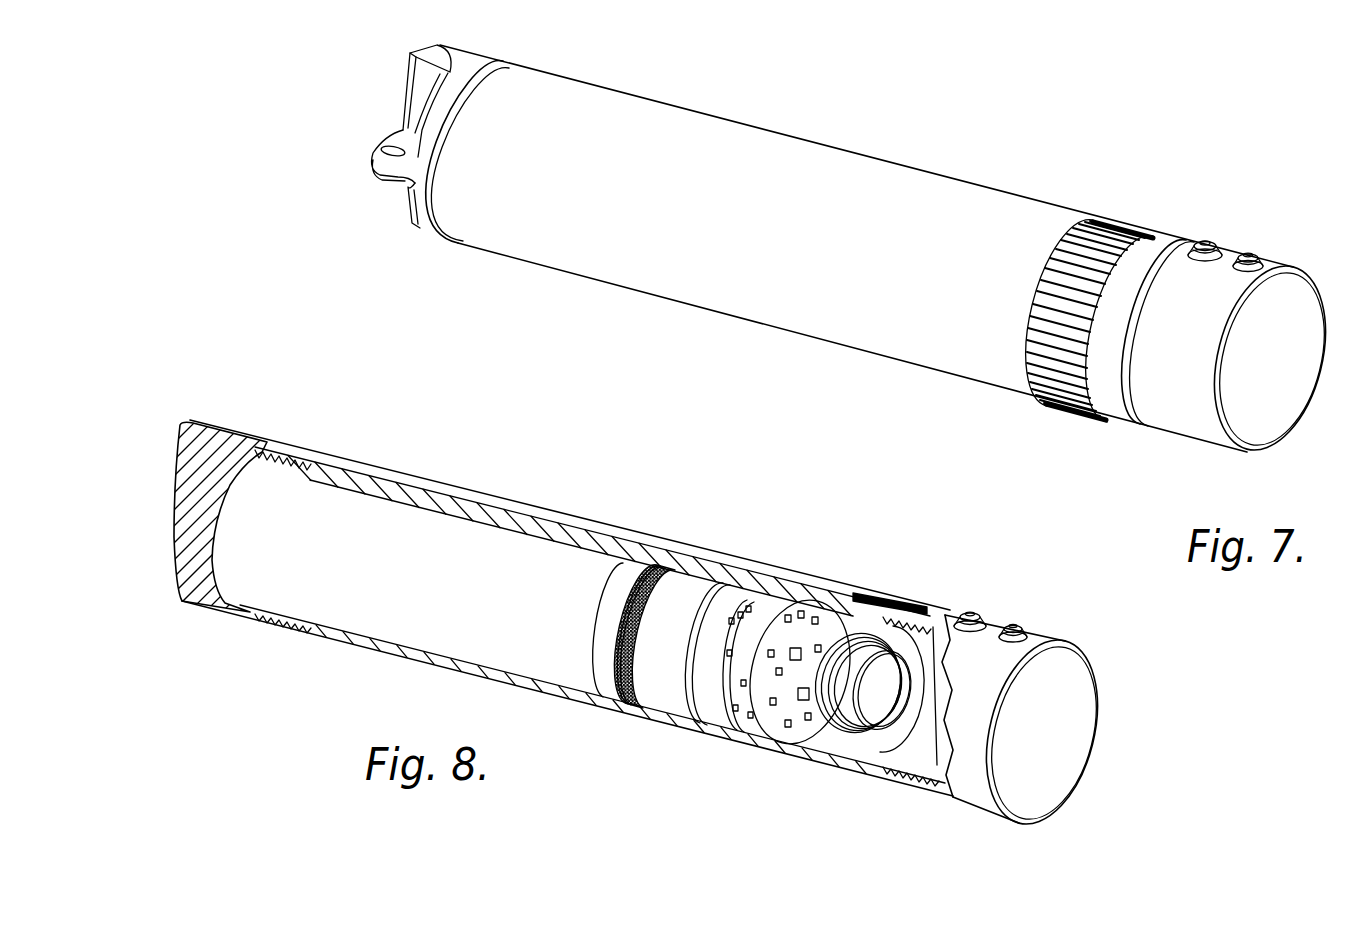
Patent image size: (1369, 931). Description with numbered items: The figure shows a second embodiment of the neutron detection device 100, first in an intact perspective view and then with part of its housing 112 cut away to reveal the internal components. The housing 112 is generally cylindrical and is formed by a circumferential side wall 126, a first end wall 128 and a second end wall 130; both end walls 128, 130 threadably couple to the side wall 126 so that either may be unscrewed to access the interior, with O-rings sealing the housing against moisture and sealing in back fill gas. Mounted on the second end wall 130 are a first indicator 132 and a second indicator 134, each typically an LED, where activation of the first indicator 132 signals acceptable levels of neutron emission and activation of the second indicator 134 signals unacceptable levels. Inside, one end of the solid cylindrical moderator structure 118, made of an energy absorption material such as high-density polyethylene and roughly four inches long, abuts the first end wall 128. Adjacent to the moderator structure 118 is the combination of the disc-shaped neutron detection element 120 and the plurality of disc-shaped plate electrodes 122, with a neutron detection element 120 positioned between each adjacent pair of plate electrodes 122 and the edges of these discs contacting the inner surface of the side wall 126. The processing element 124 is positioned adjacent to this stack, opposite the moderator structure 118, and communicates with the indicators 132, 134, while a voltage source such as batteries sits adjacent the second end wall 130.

In FIG. 7, the device 100 is at (830, 257).
In FIG. 8, the device 100 is at (583, 607).
In FIG. 7, the housing 112 is at (859, 242).
In FIG. 8, the housing 112 is at (476, 587).
In FIG. 8, the moderator structure 118 is at (400, 618).
In FIG. 8, the neutron detection element 120 is at (668, 572).
In FIG. 8, the plate electrodes 122 is at (673, 700).
In FIG. 8, the processing element 124 is at (762, 757).
In FIG. 7, the circumferential side wall 126 is at (566, 88).
In FIG. 8, the circumferential side wall 126 is at (318, 468).
In FIG. 7, the first end wall 128 is at (415, 91).
In FIG. 8, the first end wall 128 is at (193, 463).
In FIG. 7, the second end wall 130 is at (1268, 417).
In FIG. 8, the second end wall 130 is at (1067, 757).
In FIG. 7, the first indicator 132 is at (1205, 240).
In FIG. 8, the first indicator 132 is at (971, 614).
In FIG. 7, the second indicator 134 is at (1250, 254).
In FIG. 8, the second indicator 134 is at (1016, 627).